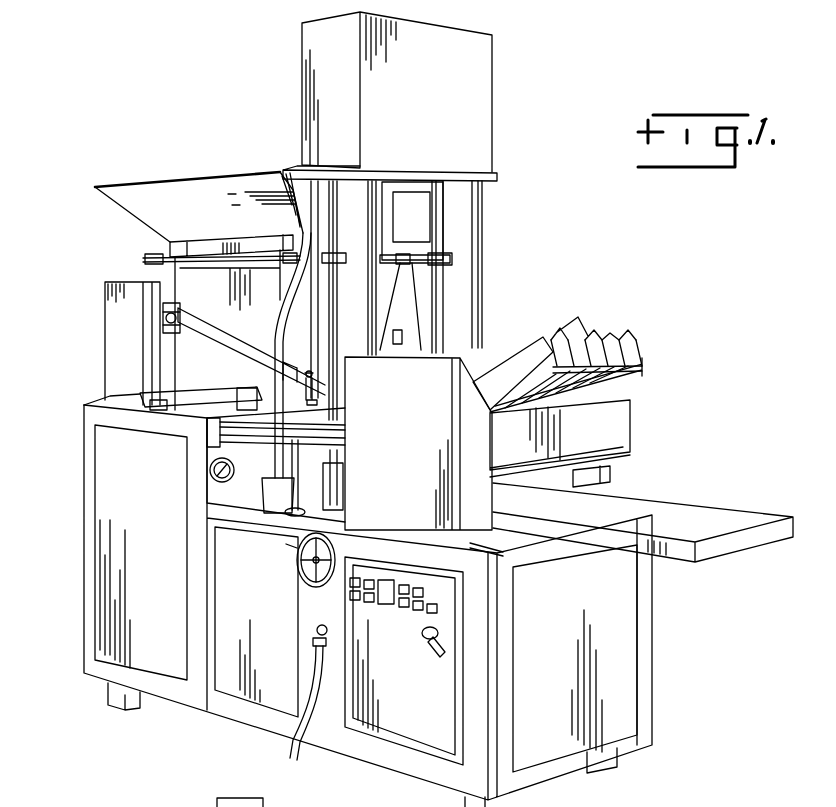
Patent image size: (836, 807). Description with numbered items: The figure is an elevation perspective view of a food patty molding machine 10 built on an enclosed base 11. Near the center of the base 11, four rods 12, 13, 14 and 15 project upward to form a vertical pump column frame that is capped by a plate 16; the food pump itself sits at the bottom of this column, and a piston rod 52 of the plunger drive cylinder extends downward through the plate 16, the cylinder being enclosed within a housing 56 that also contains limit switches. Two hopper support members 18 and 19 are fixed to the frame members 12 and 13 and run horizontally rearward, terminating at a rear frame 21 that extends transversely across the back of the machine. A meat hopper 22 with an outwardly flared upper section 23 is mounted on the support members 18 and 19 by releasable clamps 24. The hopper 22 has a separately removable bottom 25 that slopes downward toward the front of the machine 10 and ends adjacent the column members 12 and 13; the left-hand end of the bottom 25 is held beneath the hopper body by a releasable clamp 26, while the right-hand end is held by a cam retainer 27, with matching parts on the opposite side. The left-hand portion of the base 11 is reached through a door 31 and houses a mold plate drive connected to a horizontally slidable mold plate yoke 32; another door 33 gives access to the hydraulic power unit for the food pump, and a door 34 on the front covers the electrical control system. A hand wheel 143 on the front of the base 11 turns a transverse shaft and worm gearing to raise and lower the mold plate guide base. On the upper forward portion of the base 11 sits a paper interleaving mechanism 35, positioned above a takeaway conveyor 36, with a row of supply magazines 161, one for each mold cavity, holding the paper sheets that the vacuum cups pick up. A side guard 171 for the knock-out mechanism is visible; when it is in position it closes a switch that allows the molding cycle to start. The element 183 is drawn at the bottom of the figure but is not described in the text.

The food patty molding machine 10 is at (494, 245).
The enclosed base 11 is at (238, 711).
The rod 12 is at (330, 298).
The rod 13 is at (437, 326).
The rod 14 is at (371, 281).
The rod 15 is at (483, 308).
The plate 16 is at (500, 178).
The hopper support member 18 is at (198, 262).
The hopper support member 19 is at (430, 267).
The rear frame 21 is at (148, 283).
The meat hopper 22 is at (228, 322).
The outwardly flared upper section 23 is at (213, 197).
The releasable clamps 24 is at (168, 257).
The hopper bottom 25 is at (230, 360).
The releasable clamp 26 is at (173, 305).
The cam retainer 27 is at (316, 378).
The door 31 is at (110, 595).
The mold plate yoke 32 is at (318, 427).
The door 33 is at (285, 693).
The door 34 is at (427, 737).
The paper interleaving mechanism 35 is at (620, 325).
The takeaway conveyor 36 is at (693, 506).
The piston rod 52 is at (395, 318).
The housing 56 is at (478, 107).
The hand wheel 143 is at (298, 553).
The supply magazine 161 is at (606, 334).
The side guard 171 is at (418, 443).
The pedal box 183 is at (262, 803).